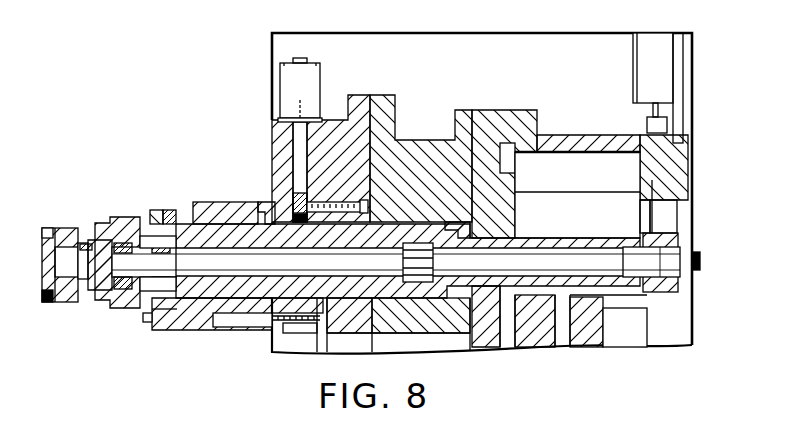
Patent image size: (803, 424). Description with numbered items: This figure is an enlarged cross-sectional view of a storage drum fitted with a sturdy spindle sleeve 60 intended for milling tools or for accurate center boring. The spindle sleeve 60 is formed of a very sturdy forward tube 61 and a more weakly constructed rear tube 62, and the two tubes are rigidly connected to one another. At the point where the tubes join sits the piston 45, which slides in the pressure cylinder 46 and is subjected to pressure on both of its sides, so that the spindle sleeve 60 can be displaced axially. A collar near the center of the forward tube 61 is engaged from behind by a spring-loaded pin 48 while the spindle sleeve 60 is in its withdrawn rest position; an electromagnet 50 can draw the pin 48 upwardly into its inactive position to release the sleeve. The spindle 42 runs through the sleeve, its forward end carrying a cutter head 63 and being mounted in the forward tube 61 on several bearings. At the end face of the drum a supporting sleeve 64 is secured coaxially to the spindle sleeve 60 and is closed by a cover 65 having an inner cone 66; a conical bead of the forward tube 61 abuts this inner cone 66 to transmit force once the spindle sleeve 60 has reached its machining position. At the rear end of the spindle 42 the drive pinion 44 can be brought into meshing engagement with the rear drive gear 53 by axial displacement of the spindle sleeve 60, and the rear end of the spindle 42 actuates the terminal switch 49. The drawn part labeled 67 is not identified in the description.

The spindle 42 is at (170, 307).
The drive pinion 44 is at (680, 240).
The piston 45 is at (458, 236).
The pressure cylinder 46 is at (408, 222).
The pin 48 is at (366, 120).
The terminal switch 49 is at (662, 50).
The electromagnet 50 is at (310, 90).
The rear drive gear 53 is at (593, 335).
The spindle sleeve 60 is at (113, 302).
The forward tube 61 is at (213, 237).
The rear tube 62 is at (566, 237).
The cutter head 63 is at (60, 230).
The supporting sleeve 64 is at (227, 210).
The cover 65 is at (150, 220).
The inner cone 66 is at (167, 215).
The step ring 67 is at (263, 207).